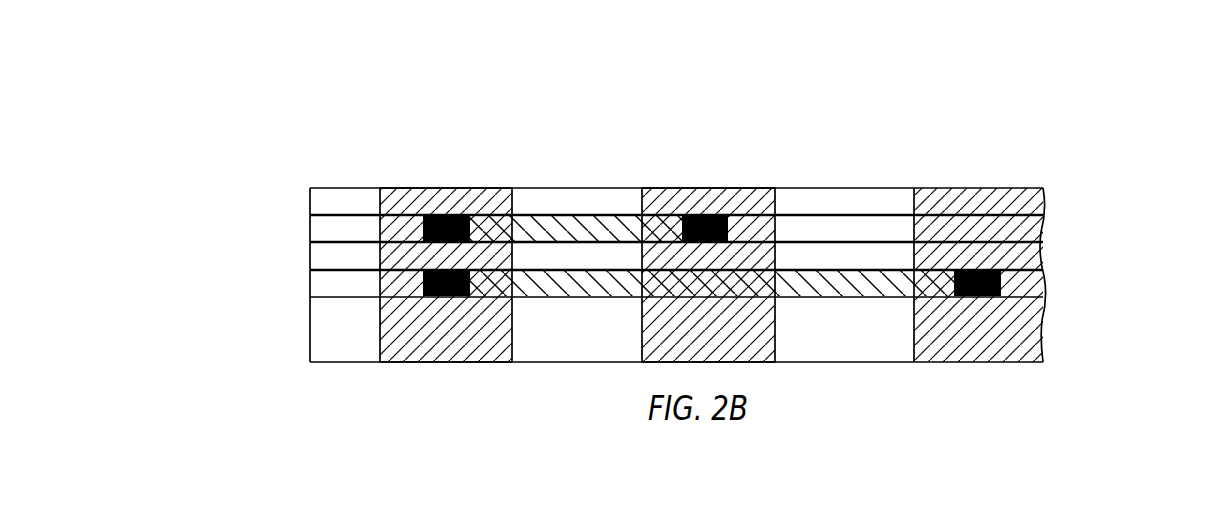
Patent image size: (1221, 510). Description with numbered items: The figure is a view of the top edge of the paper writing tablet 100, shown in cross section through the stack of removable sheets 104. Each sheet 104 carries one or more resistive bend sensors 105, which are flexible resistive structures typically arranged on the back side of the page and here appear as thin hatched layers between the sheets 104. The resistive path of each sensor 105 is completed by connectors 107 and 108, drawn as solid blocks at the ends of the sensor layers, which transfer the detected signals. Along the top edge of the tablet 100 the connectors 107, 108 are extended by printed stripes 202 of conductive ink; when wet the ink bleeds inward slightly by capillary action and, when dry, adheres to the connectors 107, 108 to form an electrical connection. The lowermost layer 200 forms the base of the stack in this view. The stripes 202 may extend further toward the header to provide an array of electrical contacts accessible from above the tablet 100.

The paper writing tablet 100 is at (682, 60).
The removable sheets 104 is at (310, 200).
The resistive bend sensors 105 is at (610, 222).
The connector 107 is at (418, 219).
The connector 108 is at (763, 216).
The substrate core 200 is at (310, 323).
The printed stripes 202 is at (517, 203).